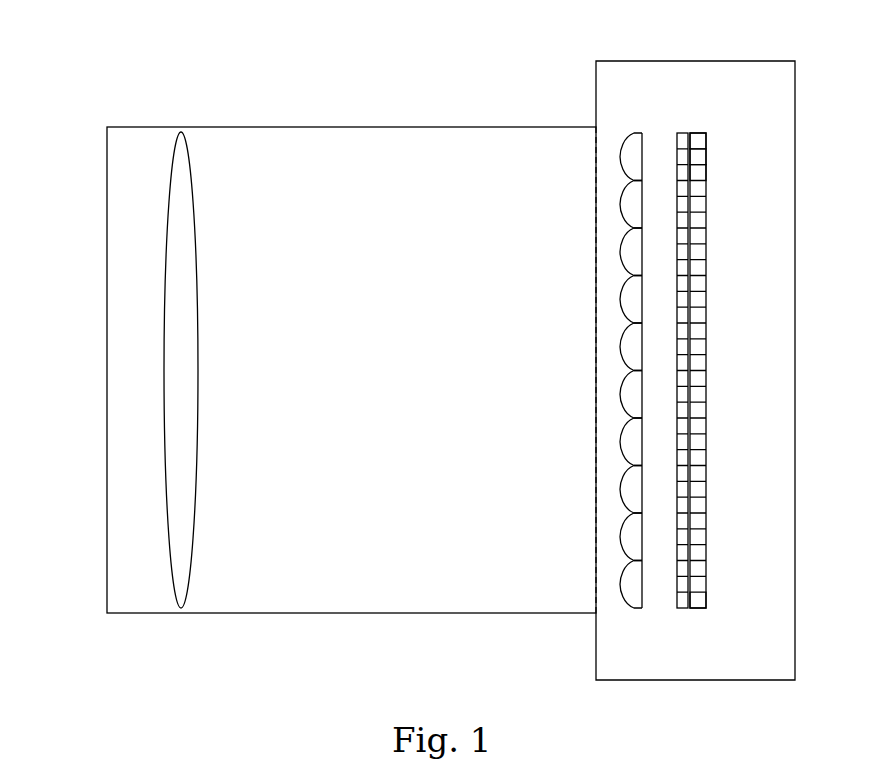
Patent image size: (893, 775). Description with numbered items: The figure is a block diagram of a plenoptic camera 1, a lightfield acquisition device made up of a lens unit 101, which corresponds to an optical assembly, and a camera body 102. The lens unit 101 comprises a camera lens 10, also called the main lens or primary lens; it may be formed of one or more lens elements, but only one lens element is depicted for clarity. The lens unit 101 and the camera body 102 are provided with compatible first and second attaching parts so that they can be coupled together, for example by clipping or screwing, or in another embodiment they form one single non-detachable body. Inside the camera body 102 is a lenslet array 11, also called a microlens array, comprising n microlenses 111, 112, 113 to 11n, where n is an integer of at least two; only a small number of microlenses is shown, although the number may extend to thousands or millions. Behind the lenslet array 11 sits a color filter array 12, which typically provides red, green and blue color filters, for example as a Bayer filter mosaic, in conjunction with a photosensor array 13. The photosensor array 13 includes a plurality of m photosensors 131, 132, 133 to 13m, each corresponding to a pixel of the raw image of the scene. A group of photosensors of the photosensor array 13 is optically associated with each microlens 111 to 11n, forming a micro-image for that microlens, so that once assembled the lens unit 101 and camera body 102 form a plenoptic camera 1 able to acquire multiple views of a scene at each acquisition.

The plenoptic camera 1 is at (121, 85).
The camera lens 10 is at (165, 250).
The lens unit 101 is at (352, 127).
The camera body 102 is at (596, 102).
The lenslet array 11 is at (589, 320).
The microlens 111 is at (620, 158).
The microlens 112 is at (620, 207).
The microlens 113 is at (620, 250).
The microlens 11n is at (620, 583).
The color filter array 12 is at (682, 128).
The photosensor array 13 is at (741, 322).
The photosensor 131 is at (706, 137).
The photosensor 132 is at (706, 150).
The photosensor 133 is at (706, 172).
The photosensor 13m is at (706, 600).